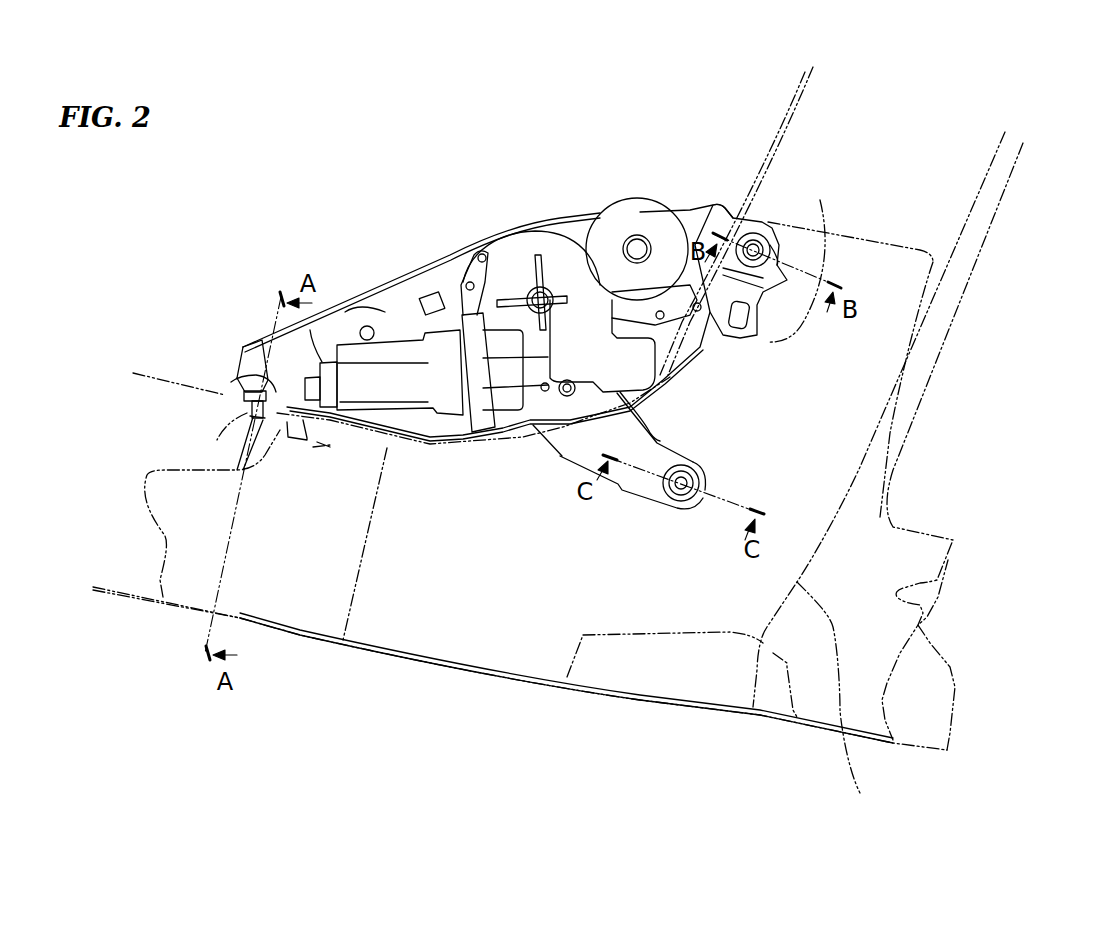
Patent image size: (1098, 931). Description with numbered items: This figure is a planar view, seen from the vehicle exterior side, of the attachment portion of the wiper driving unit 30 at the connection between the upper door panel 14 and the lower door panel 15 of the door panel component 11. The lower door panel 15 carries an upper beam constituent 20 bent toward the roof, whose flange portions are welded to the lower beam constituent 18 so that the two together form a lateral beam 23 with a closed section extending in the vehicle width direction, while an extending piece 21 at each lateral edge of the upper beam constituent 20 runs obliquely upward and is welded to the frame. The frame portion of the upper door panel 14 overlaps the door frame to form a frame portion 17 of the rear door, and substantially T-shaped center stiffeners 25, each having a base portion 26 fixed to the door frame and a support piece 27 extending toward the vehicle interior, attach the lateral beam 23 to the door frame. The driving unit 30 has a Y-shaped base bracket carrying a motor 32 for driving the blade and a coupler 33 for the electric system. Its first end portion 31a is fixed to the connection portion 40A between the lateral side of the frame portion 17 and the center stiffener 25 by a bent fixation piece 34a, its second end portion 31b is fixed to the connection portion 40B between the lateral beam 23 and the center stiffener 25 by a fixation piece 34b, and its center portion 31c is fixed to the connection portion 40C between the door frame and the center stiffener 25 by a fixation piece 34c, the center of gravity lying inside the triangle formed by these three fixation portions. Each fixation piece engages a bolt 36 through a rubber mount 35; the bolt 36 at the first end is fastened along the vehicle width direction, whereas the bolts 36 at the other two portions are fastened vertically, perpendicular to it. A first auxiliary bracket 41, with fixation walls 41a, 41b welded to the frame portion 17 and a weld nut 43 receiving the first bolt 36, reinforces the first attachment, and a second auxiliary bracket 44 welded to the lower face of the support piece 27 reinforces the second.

The door panel component 11 is at (372, 829).
The upper door panel 14 is at (318, 634).
The lower door panel 15 is at (767, 713).
The frame portion 17 is at (140, 580).
The lower beam constituent 18 is at (783, 120).
The upper beam constituent 20 is at (797, 100).
The extending piece 21 is at (443, 630).
The lateral beam 23 is at (1000, 208).
The center stiffener 25 is at (842, 703).
The base portion 26 is at (302, 610).
The support piece 27 is at (890, 333).
The driving unit 30 is at (355, 301).
The first end portion 31a is at (260, 350).
The second end portion 31b is at (720, 217).
The center portion 31c is at (648, 455).
The motor 32 is at (622, 203).
The coupler 33 is at (583, 312).
The fixation piece 34a is at (234, 368).
The fixation piece 34b is at (773, 272).
The fixation piece 34c is at (695, 461).
The rubber mount 35 is at (250, 404).
The bolt 36 is at (243, 416).
The connection portion 40A is at (300, 440).
The connection portion 40B is at (822, 236).
The connection portion 40C is at (673, 507).
The first auxiliary bracket 41 is at (218, 378).
The fixation wall 41a is at (227, 427).
The fixation wall 41b is at (320, 457).
The weld nut 43 is at (290, 427).
The second auxiliary bracket 44 is at (786, 215).